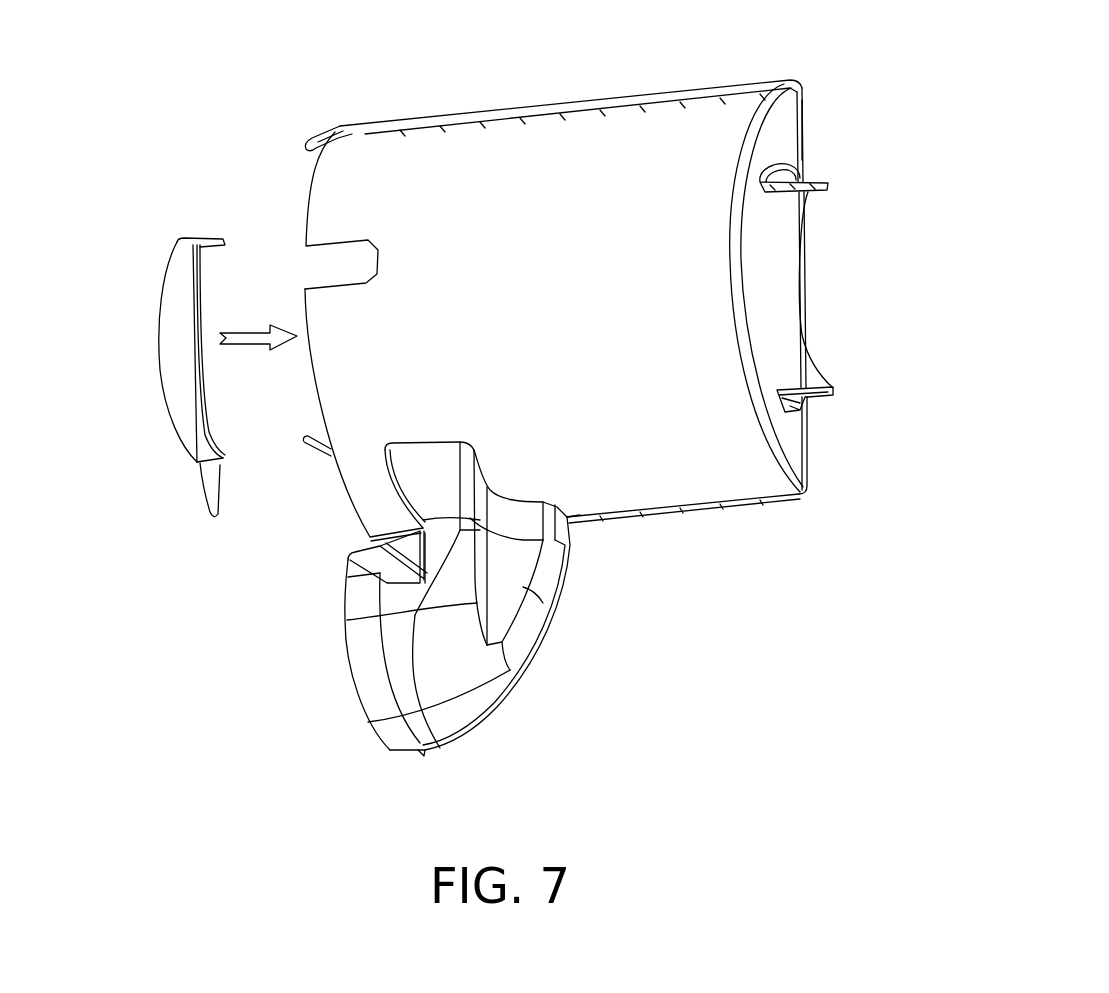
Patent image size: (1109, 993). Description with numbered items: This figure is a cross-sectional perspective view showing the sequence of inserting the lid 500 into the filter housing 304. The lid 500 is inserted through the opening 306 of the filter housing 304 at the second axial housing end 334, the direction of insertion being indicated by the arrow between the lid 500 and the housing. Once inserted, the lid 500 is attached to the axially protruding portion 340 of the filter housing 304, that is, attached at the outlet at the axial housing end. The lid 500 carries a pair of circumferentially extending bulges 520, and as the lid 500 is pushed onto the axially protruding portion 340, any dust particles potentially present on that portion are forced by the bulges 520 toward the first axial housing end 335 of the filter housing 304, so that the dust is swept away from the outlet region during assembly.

The filter housing 304 is at (570, 272).
The opening 306 is at (367, 473).
The second axial housing end 334 is at (306, 193).
The first axial housing end 335 is at (805, 137).
The axially protruding portion 340 is at (785, 195).
The lid 500 is at (181, 388).
The pair of circumferentially extending bulges 520 is at (217, 516).